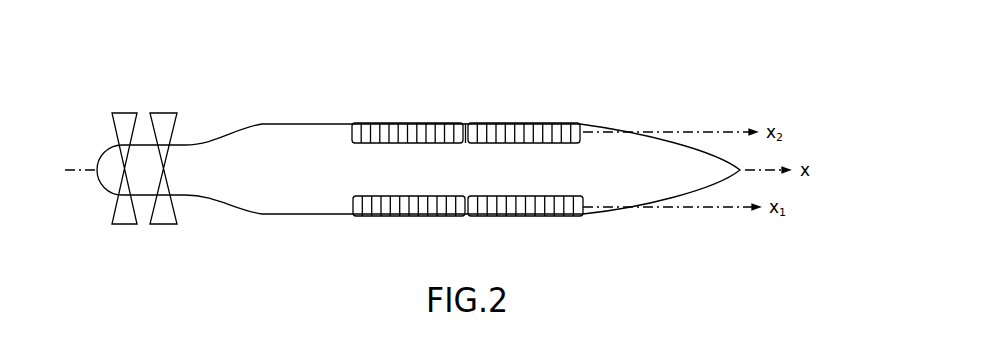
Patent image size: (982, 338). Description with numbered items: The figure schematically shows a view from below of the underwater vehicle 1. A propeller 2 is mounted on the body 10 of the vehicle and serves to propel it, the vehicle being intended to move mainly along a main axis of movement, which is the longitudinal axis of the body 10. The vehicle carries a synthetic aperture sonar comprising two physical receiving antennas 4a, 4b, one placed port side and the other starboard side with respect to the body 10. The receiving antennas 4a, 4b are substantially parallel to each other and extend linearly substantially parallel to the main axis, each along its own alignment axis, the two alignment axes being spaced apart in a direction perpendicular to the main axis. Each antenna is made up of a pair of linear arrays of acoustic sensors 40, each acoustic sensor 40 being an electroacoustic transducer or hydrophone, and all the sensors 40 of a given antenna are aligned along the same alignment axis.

The underwater vehicle 1 is at (280, 62).
The propeller 2 is at (139, 100).
The body 10 is at (268, 153).
The physical receiving antenna 4a is at (357, 224).
The physical receiving antenna 4b is at (510, 86).
The acoustic sensor 40 is at (466, 111).